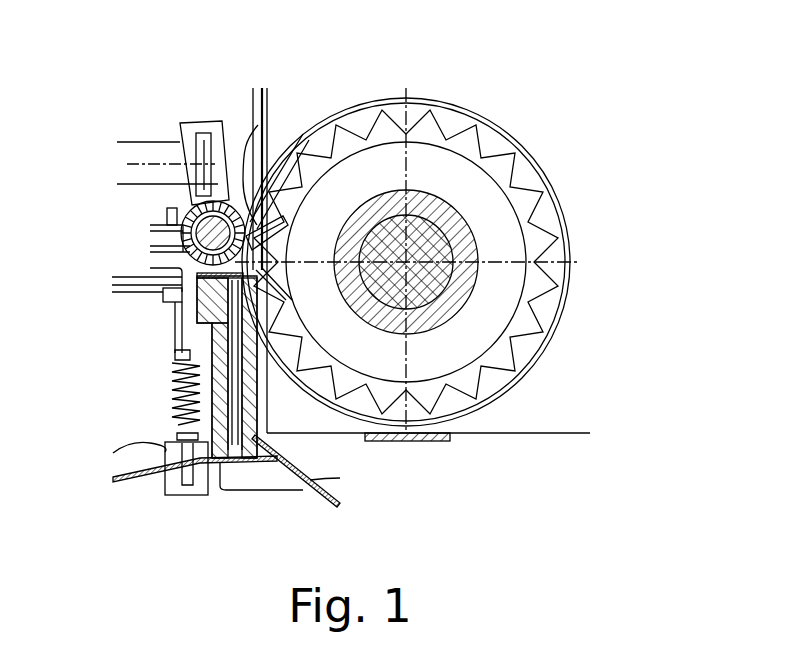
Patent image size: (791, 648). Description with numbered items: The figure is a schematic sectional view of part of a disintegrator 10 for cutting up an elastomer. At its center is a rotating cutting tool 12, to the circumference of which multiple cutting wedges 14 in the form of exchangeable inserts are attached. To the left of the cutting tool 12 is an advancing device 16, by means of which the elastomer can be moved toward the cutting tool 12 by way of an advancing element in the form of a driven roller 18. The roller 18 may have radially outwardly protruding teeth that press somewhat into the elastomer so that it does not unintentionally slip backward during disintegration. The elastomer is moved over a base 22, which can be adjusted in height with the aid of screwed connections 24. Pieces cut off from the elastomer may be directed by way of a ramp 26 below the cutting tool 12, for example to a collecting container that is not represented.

The disintegrator 10 is at (607, 152).
The rotating cutting tool 12 is at (505, 252).
The cutting wedges 14 is at (258, 125).
The advancing device 16 is at (145, 222).
The driven roller 18 is at (200, 200).
The base 22 is at (186, 263).
The screwed connections 24 is at (175, 388).
The ramp 26 is at (337, 497).